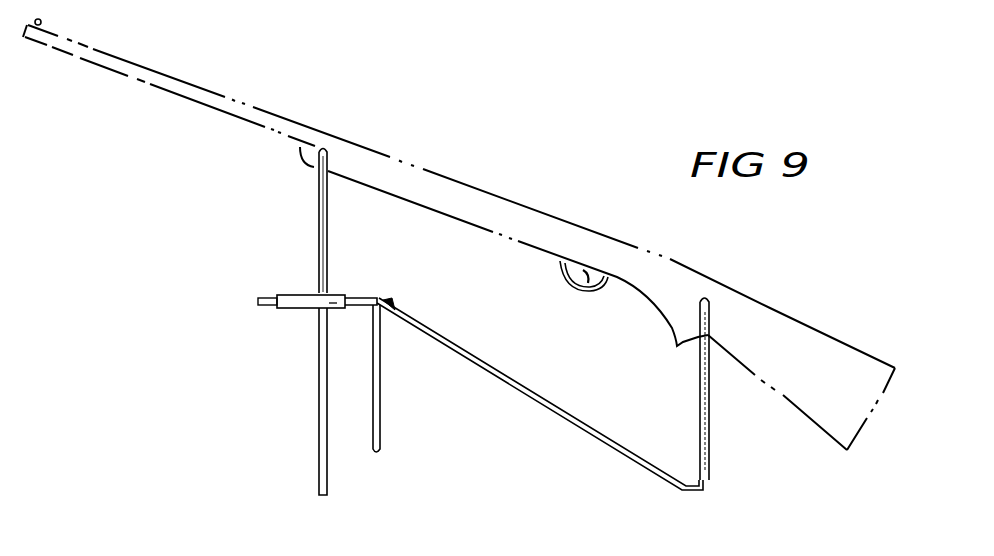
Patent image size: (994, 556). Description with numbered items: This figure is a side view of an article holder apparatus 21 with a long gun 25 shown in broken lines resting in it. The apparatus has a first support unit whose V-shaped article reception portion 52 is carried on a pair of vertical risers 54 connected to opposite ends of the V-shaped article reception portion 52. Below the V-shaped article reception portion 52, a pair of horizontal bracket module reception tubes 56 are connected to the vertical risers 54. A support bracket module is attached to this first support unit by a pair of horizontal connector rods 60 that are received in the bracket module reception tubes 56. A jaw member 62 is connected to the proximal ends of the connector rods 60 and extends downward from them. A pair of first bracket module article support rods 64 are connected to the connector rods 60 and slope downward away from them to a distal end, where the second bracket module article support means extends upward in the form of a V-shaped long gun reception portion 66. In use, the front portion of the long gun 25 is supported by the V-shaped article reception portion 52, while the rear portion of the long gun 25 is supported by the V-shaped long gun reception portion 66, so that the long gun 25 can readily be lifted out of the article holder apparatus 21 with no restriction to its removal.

The article holder apparatus 21 is at (197, 266).
The long gun 25 is at (805, 333).
The V-shaped article reception portion 52 is at (318, 232).
The vertical risers 54 is at (318, 388).
The horizontal bracket module reception tubes 56 is at (295, 304).
The horizontal connector rods 60 is at (365, 296).
The jaw member 62 is at (381, 451).
The first bracket module article support rods 64 is at (549, 407).
The V-shaped long gun reception portion 66 is at (710, 422).